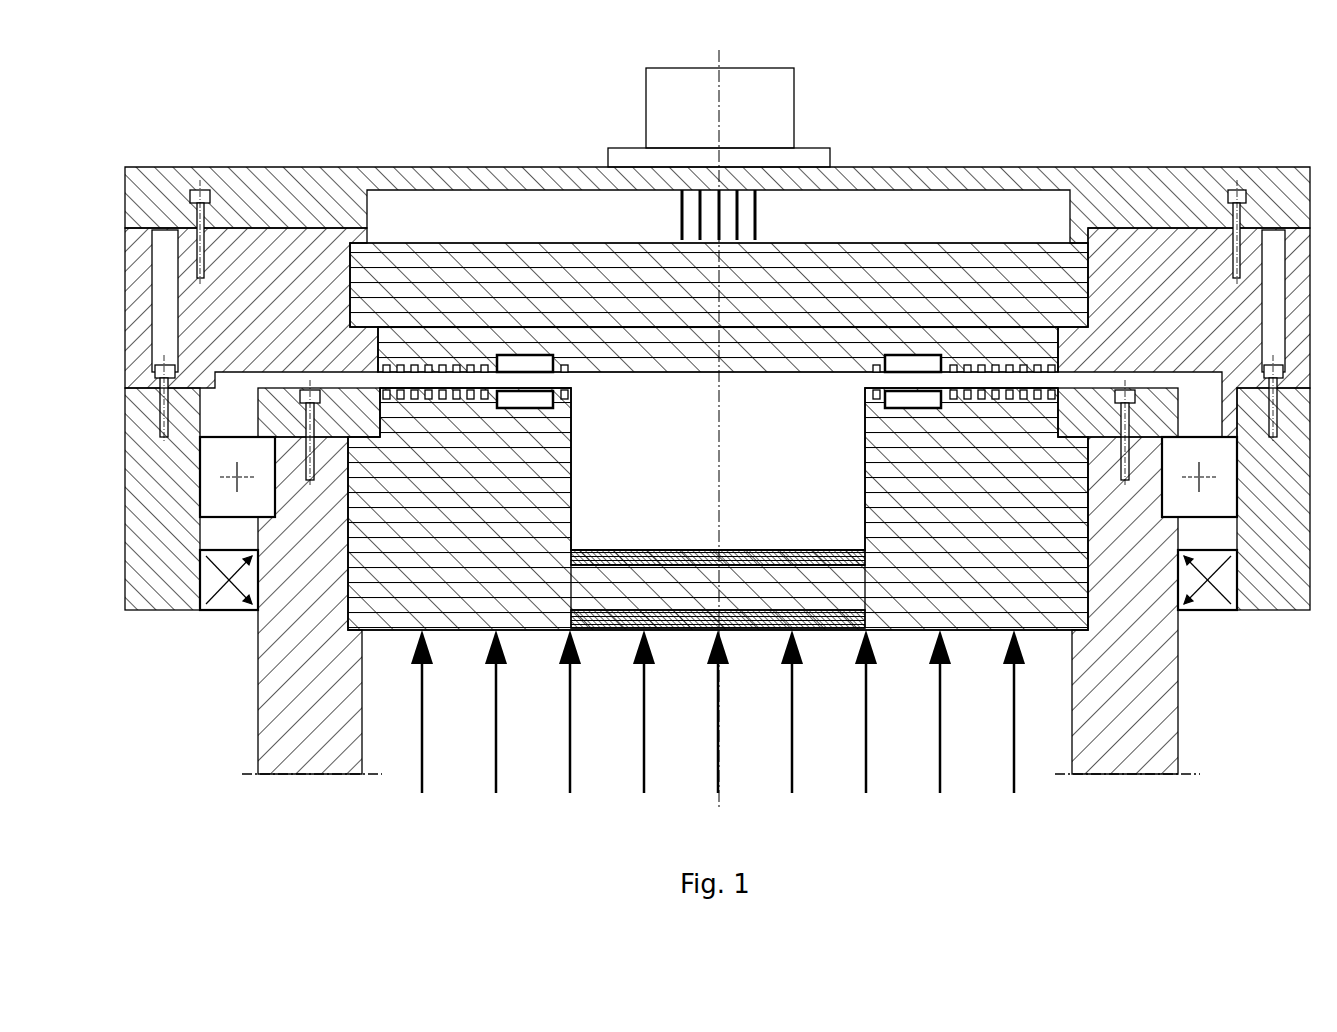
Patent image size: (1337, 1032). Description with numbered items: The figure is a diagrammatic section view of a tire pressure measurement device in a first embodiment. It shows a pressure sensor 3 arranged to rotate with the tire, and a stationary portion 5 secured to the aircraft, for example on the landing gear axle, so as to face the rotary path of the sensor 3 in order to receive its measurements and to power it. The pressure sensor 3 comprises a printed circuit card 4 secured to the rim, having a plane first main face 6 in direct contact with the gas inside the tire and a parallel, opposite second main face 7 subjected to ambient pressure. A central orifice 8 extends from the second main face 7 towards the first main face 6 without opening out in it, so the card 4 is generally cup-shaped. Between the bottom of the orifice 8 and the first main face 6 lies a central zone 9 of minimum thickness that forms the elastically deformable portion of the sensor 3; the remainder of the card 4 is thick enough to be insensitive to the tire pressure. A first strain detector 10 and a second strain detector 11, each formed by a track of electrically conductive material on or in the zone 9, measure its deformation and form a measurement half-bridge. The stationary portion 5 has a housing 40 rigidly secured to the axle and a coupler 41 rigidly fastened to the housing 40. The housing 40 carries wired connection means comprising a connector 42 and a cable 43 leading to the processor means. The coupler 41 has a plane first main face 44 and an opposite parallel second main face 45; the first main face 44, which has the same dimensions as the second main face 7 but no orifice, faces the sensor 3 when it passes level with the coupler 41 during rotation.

The pressure sensor 3 is at (233, 702).
The printed circuit card 4 is at (372, 632).
The stationary portion 5 is at (428, 125).
The first main face 6 is at (1058, 632).
The second main face 7 is at (865, 388).
The central orifice 8 is at (571, 470).
The central zone 9 is at (632, 588).
The first strain detector 10 is at (748, 550).
The second strain detector 11 is at (795, 615).
The housing 40 is at (1138, 190).
The coupler 41 is at (1018, 275).
The connector 42 is at (608, 160).
The cable 43 is at (652, 105).
The first main face 44 is at (670, 372).
The second main face 45 is at (824, 240).